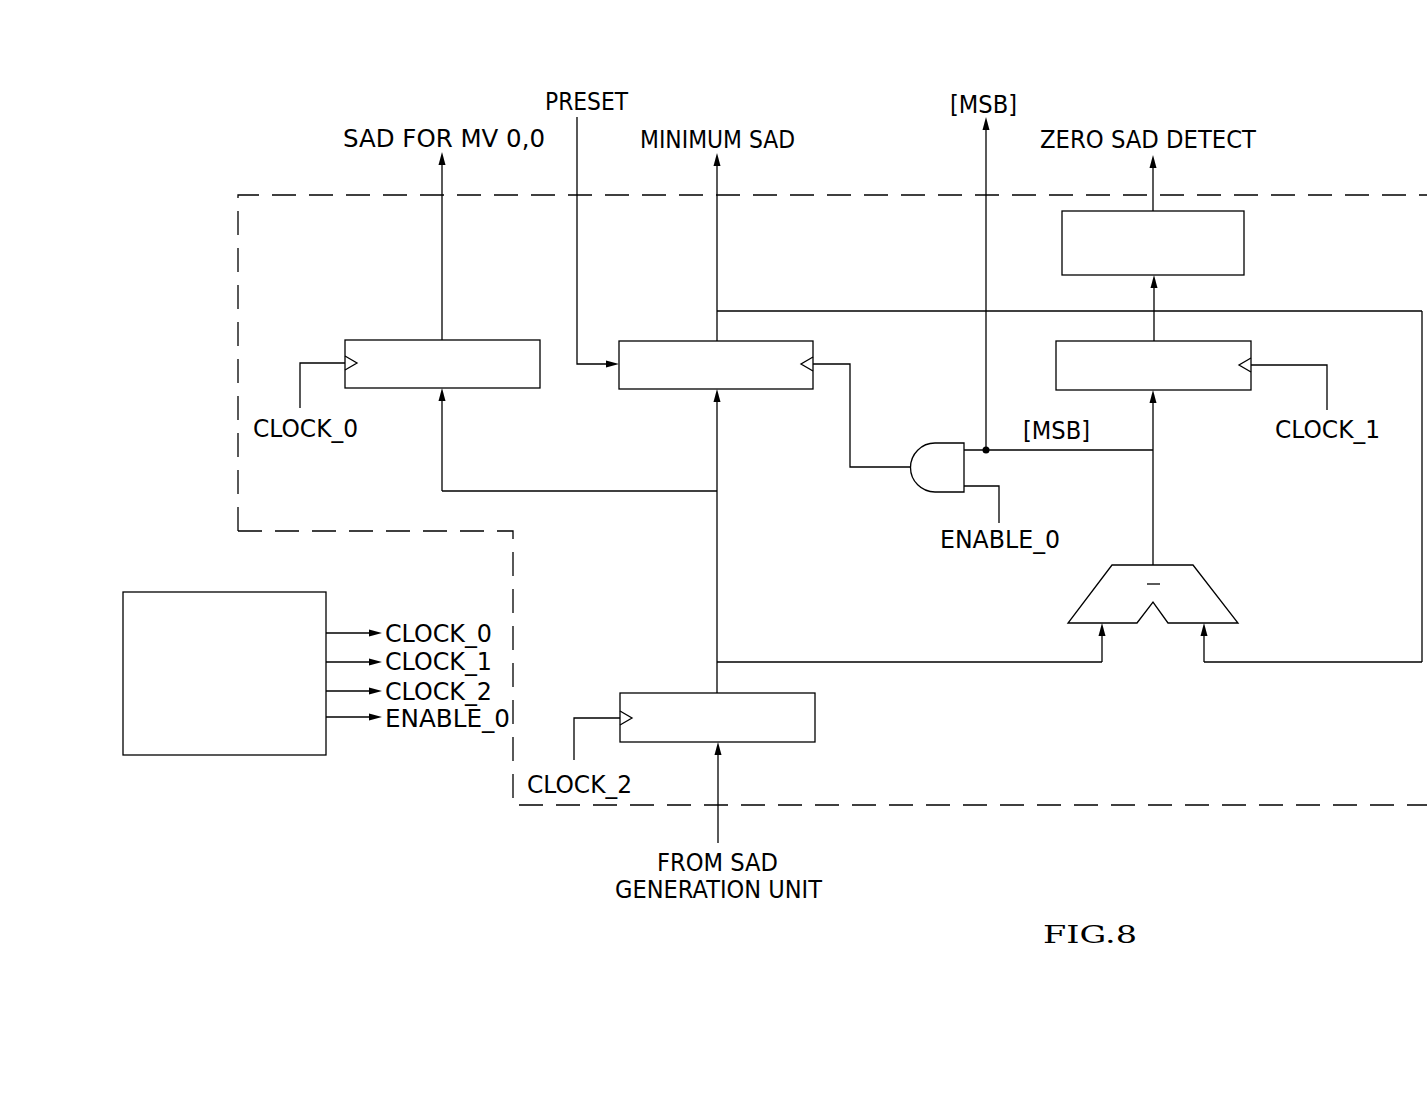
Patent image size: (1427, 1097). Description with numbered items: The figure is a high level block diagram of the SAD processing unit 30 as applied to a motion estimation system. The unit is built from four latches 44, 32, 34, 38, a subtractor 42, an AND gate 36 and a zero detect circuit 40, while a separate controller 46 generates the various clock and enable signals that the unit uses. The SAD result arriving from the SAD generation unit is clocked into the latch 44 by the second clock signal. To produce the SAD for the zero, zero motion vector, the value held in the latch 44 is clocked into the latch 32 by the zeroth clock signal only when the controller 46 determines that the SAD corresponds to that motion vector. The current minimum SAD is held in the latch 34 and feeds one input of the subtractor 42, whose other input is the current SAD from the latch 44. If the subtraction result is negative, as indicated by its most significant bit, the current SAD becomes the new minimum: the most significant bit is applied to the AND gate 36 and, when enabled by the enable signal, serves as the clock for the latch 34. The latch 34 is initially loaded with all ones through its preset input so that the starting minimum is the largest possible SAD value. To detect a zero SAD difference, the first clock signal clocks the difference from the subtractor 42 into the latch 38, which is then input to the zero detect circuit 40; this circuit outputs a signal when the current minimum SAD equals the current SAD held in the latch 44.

The SAD processing unit 30 is at (1295, 806).
The latch 32 is at (482, 388).
The latch 34 is at (666, 389).
The AND gate 36 is at (922, 489).
The latch 38 is at (1200, 390).
The zero detect circuit 40 is at (1244, 234).
The subtractor 42 is at (1212, 590).
The latch 44 is at (815, 718).
The controller 46 is at (243, 592).